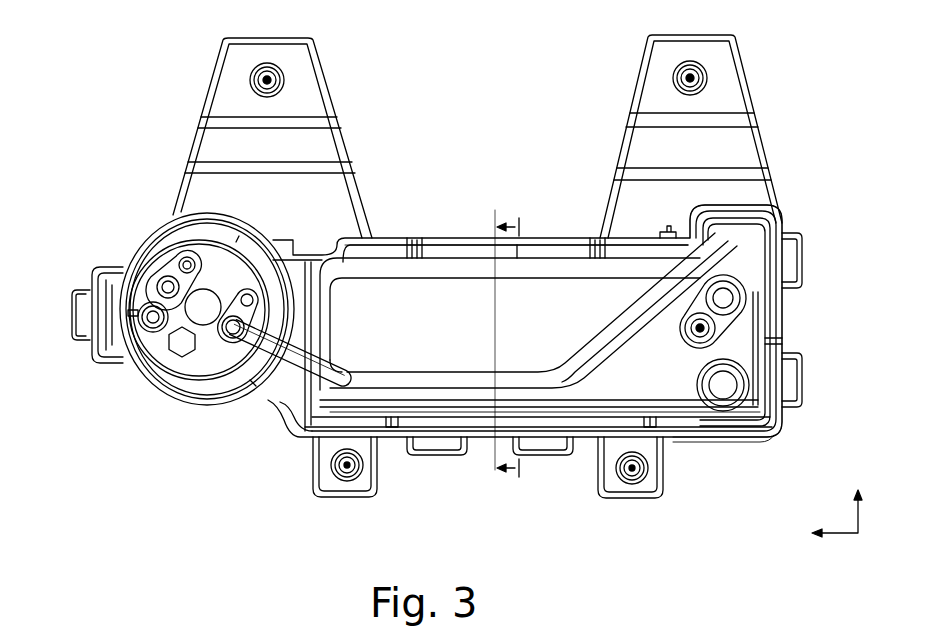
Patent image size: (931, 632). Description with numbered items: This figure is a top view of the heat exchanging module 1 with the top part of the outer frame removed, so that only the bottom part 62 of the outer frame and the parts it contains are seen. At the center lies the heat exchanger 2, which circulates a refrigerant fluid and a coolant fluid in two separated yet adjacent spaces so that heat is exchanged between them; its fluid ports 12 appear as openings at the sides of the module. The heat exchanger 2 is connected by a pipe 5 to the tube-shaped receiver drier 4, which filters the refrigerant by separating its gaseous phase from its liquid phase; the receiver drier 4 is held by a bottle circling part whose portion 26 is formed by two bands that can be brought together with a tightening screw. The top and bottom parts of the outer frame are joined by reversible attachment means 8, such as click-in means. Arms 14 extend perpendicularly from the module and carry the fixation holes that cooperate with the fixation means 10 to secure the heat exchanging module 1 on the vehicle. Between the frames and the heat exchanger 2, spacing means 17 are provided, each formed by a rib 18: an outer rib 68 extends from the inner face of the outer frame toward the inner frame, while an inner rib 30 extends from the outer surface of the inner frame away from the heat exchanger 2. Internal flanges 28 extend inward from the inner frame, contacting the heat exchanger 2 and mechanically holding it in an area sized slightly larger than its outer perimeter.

The heat exchanging module 1 is at (143, 163).
The heat exchanger 2 is at (453, 290).
The receiver drier 4 is at (147, 380).
The pipe 5 is at (768, 212).
The attachment means 8 is at (443, 453).
The fixation means 10 is at (283, 83).
The fluid ports 12 is at (160, 287).
The arms 14 is at (200, 190).
The spacing means 17 is at (418, 228).
The rib 18 is at (597, 240).
The portion 26 is at (285, 292).
The internal flange 28 is at (593, 420).
The inner rib 30 is at (637, 349).
The bottom part 62 is at (723, 440).
The outer rib 68 is at (410, 237).